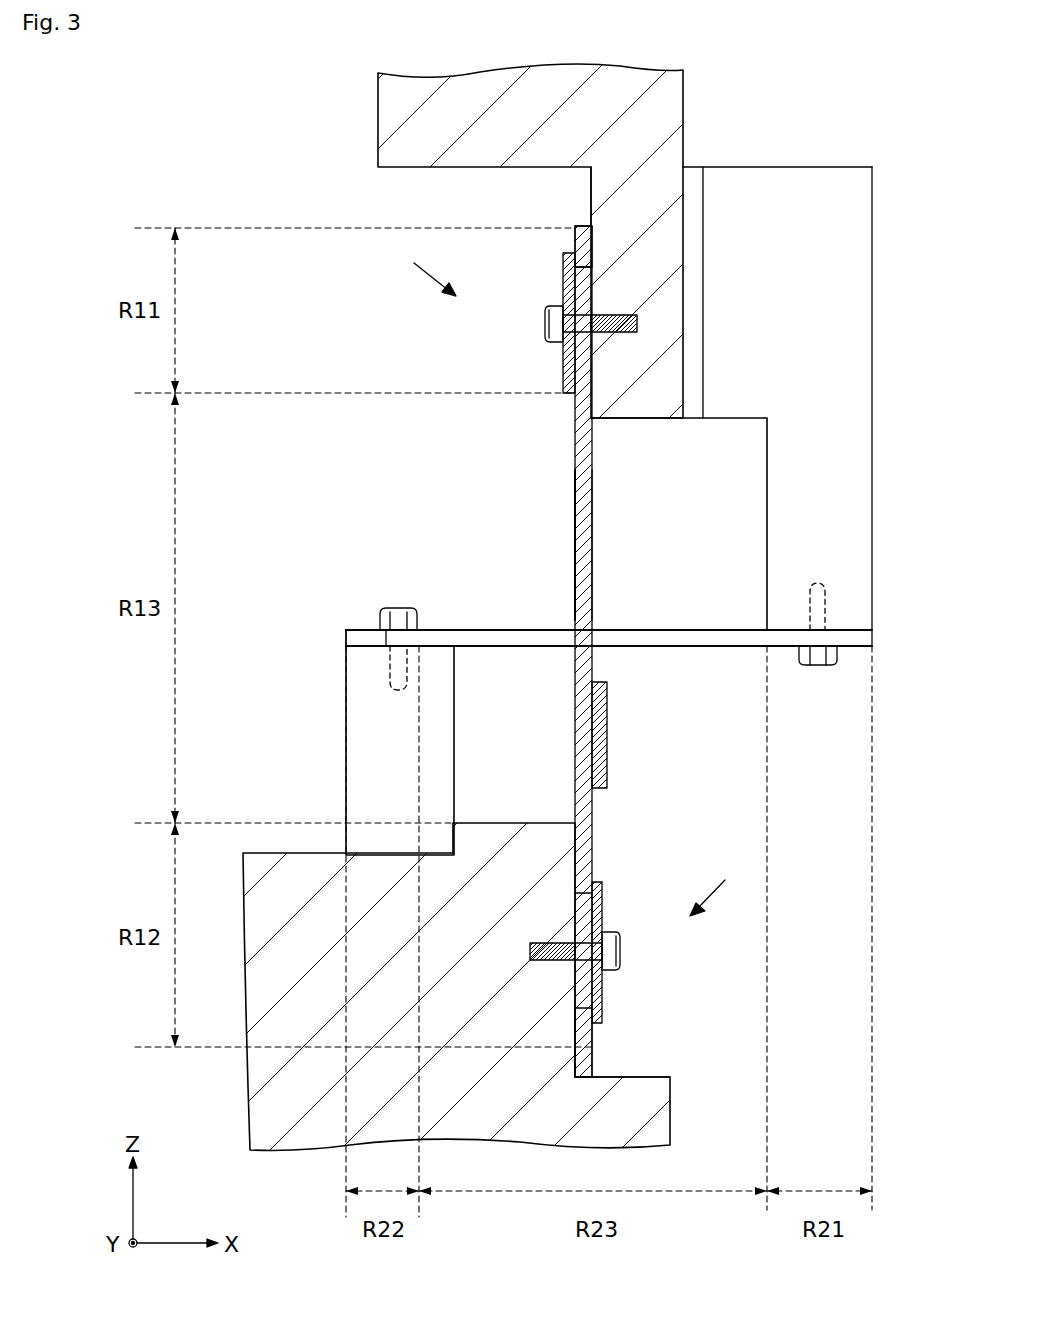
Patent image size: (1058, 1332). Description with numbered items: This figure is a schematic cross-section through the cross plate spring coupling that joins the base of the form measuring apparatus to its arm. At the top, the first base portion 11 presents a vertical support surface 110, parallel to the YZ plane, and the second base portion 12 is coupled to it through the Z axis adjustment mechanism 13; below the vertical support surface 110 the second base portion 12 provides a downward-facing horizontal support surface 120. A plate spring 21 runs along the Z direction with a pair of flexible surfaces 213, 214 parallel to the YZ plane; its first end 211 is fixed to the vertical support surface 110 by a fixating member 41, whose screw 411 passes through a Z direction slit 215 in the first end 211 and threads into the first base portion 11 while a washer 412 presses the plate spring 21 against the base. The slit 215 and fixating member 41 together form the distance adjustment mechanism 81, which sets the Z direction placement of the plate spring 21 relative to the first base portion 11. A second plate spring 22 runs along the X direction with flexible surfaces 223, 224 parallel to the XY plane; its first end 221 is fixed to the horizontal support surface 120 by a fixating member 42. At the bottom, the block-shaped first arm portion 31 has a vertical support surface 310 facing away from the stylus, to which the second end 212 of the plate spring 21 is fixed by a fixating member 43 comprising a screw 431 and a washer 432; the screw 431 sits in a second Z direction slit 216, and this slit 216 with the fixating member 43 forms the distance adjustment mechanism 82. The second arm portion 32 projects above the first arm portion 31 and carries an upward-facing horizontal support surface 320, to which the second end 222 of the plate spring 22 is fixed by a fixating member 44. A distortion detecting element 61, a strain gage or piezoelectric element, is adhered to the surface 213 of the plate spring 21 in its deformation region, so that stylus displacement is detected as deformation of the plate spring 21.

The first base portion 11 is at (683, 134).
The vertical support surface 110 is at (591, 192).
The second base portion 12 is at (870, 218).
The Z axis adjustment mechanism 13 is at (695, 196).
The plate spring 21 is at (575, 485).
The first end 211 is at (575, 252).
The second end 212 is at (592, 1050).
The surface 213 is at (592, 545).
The surface 214 is at (575, 543).
The slit 215 is at (575, 268).
The slit 216 is at (602, 898).
The plate spring 22 is at (697, 635).
The first end 221 is at (832, 632).
The second end 222 is at (440, 635).
The surface 223 is at (520, 630).
The surface 224 is at (522, 650).
The first arm portion 31 is at (520, 825).
The vertical support surface 310 is at (600, 1066).
The second arm portion 32 is at (348, 738).
The horizontal support surface 320 is at (368, 642).
The fixating member 41 is at (540, 323).
The screw 411 is at (545, 325).
The washer 412 is at (563, 368).
The fixating member 42 is at (818, 667).
The fixating member 43 is at (627, 955).
The screw 431 is at (622, 958).
The washer 432 is at (603, 993).
The fixating member 44 is at (398, 605).
The distortion detecting element 61 is at (605, 690).
The distance adjustment mechanism 81 is at (420, 274).
The distance adjustment mechanism 82 is at (723, 892).
The horizontal support surface 120 is at (848, 632).